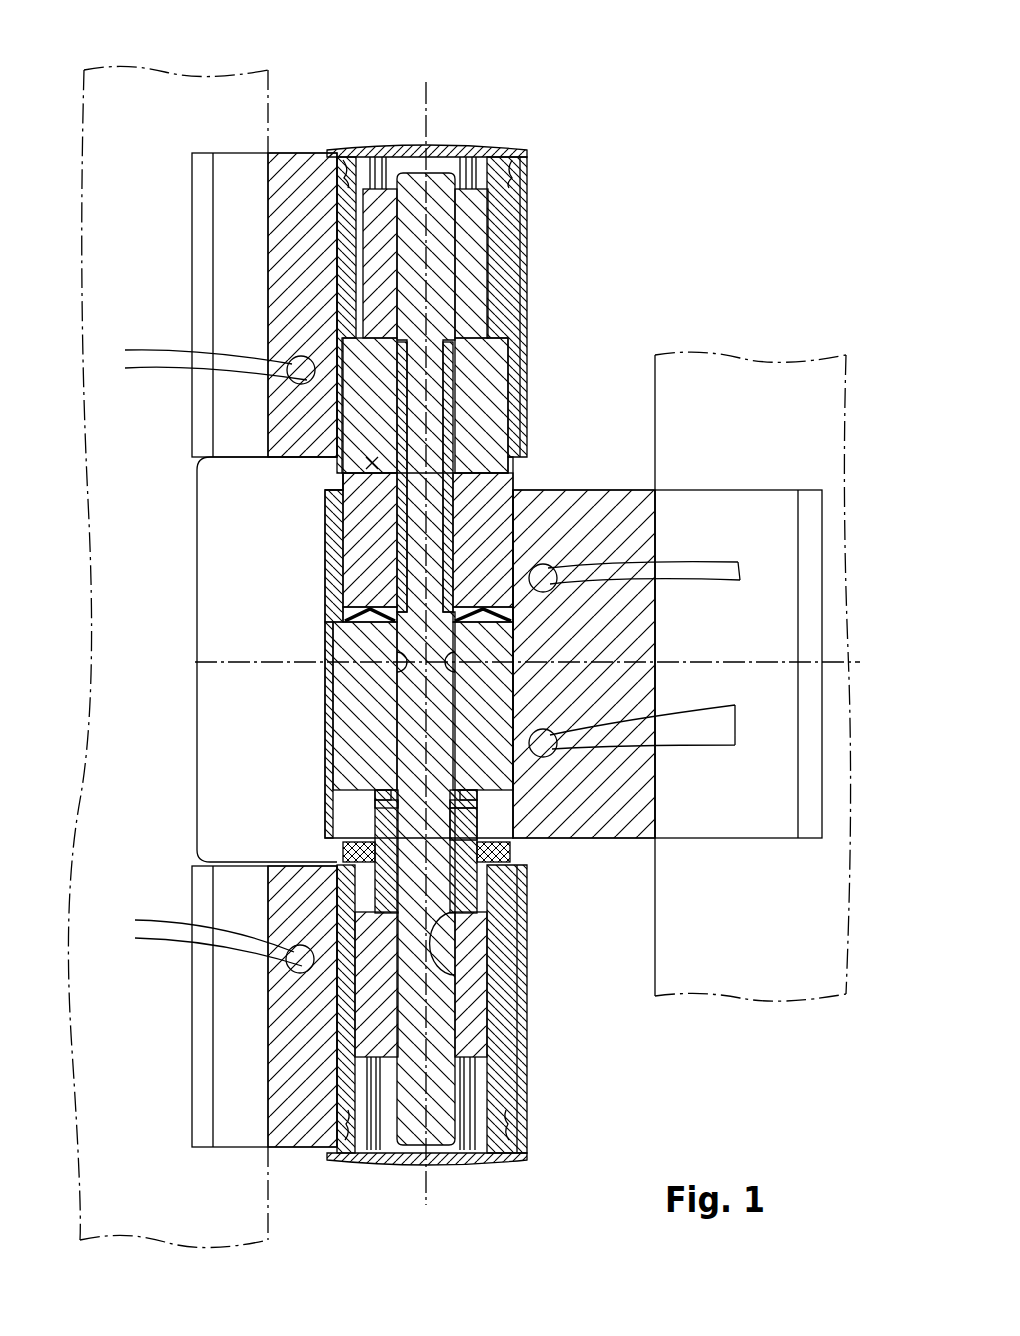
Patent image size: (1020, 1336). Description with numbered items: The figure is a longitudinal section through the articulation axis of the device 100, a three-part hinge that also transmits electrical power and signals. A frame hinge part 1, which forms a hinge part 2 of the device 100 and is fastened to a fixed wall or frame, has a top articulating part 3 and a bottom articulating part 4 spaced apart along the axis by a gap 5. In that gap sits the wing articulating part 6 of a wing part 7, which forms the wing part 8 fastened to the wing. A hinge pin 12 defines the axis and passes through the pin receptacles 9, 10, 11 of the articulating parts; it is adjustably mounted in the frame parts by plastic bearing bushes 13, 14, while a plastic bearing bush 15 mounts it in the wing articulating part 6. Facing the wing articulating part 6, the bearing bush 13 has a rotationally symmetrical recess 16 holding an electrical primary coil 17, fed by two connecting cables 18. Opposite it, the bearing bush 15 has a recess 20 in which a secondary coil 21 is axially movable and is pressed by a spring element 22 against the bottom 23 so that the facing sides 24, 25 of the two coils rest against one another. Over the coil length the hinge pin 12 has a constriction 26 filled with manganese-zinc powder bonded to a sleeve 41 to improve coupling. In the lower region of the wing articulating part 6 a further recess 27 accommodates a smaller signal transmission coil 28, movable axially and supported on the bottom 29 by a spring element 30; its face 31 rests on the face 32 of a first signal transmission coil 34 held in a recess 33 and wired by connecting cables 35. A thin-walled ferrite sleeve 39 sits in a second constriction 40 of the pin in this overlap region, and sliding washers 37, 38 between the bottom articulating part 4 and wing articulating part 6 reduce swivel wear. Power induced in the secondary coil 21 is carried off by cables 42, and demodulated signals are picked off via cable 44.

The frame hinge part 1 is at (122, 222).
The hinge part 2 is at (140, 1025).
The top articulating part 3 is at (509, 188).
The bottom articulating part 4 is at (524, 1118).
The gap 5 is at (178, 650).
The wing articulating part 6 is at (310, 712).
The wing part 7 is at (700, 470).
The wing part 8 is at (738, 664).
The pin receptacle 9 is at (483, 172).
The pin receptacle 10 is at (340, 484).
The pin receptacle 11 is at (372, 1160).
The hinge pin 12 is at (437, 212).
The bearing bush 13 is at (500, 246).
The bearing bush 14 is at (500, 1090).
The bearing bush 15 is at (362, 760).
The recess 16 is at (512, 348).
The primary coil 17 is at (482, 402).
The connecting cables 18 is at (137, 352).
The recess 20 is at (512, 484).
The secondary coil 21 is at (370, 566).
The spring element 22 is at (347, 600).
The bottom 23 is at (356, 640).
The facing side 24 is at (492, 442).
The facing side 25 is at (372, 456).
The constriction 26 is at (438, 318).
The recess 27 is at (465, 805).
The signal transmission coil 28 is at (370, 823).
The bottom 29 is at (376, 790).
The spring element 30 is at (465, 795).
The face 31 is at (347, 850).
The face 32 is at (468, 890).
The recess 33 is at (456, 937).
The signal transmission coil 34 is at (482, 918).
The connecting cables 35 is at (148, 920).
The sliding washer 37 is at (498, 851).
The sliding washer 38 is at (493, 870).
The sleeve 39 is at (465, 815).
The constriction 40 is at (458, 975).
The sleeve 41 is at (462, 372).
The cables 42 is at (736, 562).
The cable 44 is at (735, 722).
The device 100 is at (568, 280).